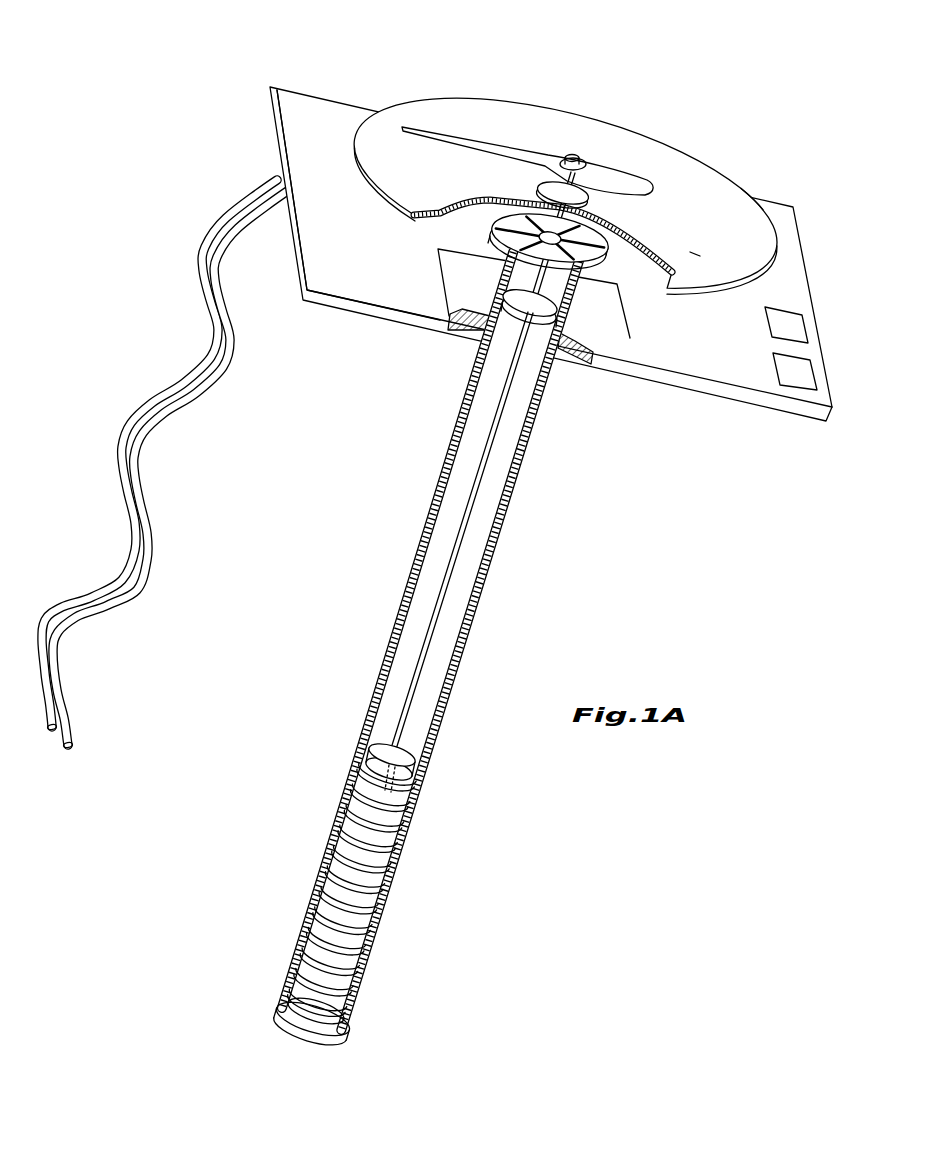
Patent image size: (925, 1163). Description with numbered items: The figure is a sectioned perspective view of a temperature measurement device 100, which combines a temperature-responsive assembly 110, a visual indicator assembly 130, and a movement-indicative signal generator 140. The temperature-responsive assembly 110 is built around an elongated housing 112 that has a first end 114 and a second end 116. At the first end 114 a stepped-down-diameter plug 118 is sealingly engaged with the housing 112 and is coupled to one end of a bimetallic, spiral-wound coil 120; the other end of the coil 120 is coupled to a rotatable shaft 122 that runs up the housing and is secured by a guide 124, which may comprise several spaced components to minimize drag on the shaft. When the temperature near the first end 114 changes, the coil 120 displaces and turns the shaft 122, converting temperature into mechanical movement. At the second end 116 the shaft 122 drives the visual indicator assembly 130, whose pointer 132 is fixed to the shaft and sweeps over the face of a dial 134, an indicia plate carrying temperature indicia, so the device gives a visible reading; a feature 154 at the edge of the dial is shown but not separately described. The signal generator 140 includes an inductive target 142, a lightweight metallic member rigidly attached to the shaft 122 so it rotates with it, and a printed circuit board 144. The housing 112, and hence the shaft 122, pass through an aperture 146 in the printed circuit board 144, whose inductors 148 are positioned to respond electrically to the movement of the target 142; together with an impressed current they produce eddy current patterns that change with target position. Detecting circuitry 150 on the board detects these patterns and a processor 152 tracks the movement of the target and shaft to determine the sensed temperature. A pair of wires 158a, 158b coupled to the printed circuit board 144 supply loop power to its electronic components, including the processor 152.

The temperature measurement device 100 is at (643, 62).
The temperature-responsive assembly 110 is at (475, 795).
The elongated housing 112 is at (500, 575).
The first end 114 is at (361, 1023).
The second end 116 is at (604, 273).
The stepped-down-diameter plug 118 is at (312, 1044).
The bimetallic, spiral-wound coil 120 is at (372, 782).
The rotatable shaft 122 is at (447, 585).
The guide 124 is at (534, 372).
The visual indicator assembly 130 is at (645, 133).
The pointer 132 is at (457, 128).
The dial 134 is at (708, 243).
The movement-indicative signal generator 140 is at (467, 346).
The inductive target 142 is at (497, 223).
The printed circuit board 144 is at (402, 283).
The aperture 146 is at (563, 360).
The inductors 148 is at (634, 336).
The detecting circuitry 150 is at (784, 306).
The processor 152 is at (800, 390).
The dial edge 154 is at (766, 204).
The wire 158a is at (123, 418).
The wire 158b is at (168, 525).